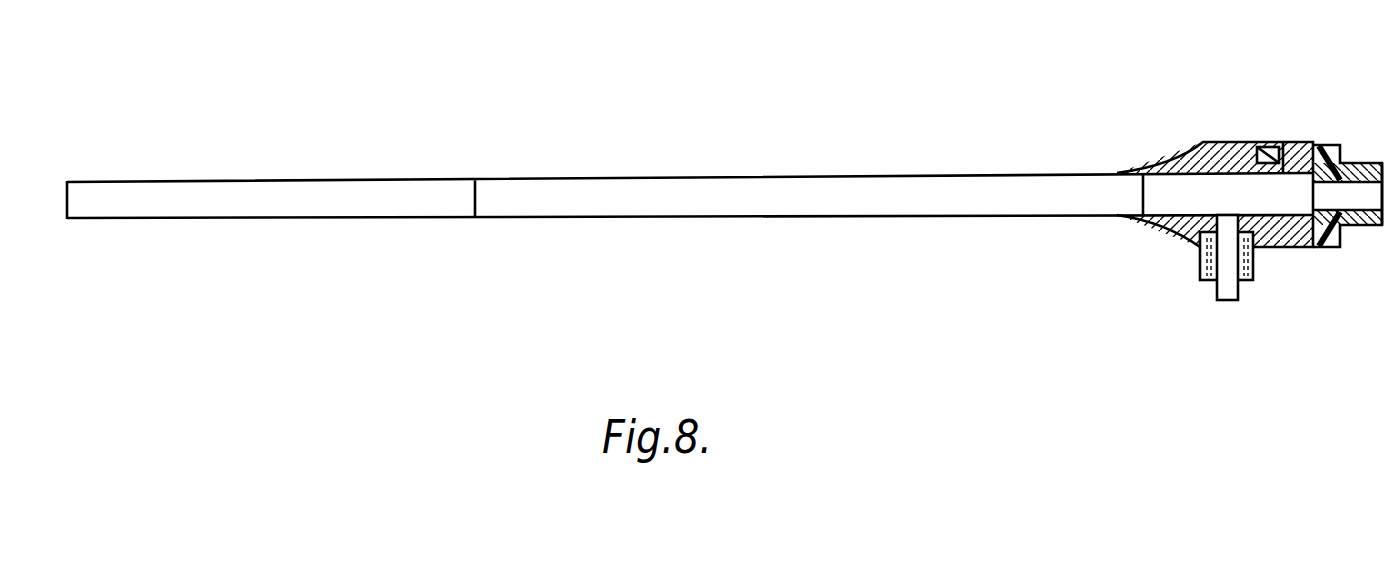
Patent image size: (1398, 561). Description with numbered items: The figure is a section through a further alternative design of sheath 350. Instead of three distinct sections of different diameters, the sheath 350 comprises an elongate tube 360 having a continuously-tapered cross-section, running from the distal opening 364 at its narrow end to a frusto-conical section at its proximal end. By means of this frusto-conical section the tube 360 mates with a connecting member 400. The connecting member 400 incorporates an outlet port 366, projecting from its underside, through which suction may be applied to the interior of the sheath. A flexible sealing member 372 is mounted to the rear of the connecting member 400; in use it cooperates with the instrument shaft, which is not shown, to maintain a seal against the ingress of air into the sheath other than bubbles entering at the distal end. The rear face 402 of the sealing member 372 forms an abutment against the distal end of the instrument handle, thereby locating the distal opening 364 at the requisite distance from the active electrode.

The sheath 350 is at (725, 195).
The elongate tube 360 is at (862, 176).
The distal opening 364 is at (65, 207).
The connecting member 400 is at (1232, 145).
The outlet port 366 is at (1227, 303).
The flexible sealing member 372 is at (1343, 148).
The rear face 402 is at (1384, 226).